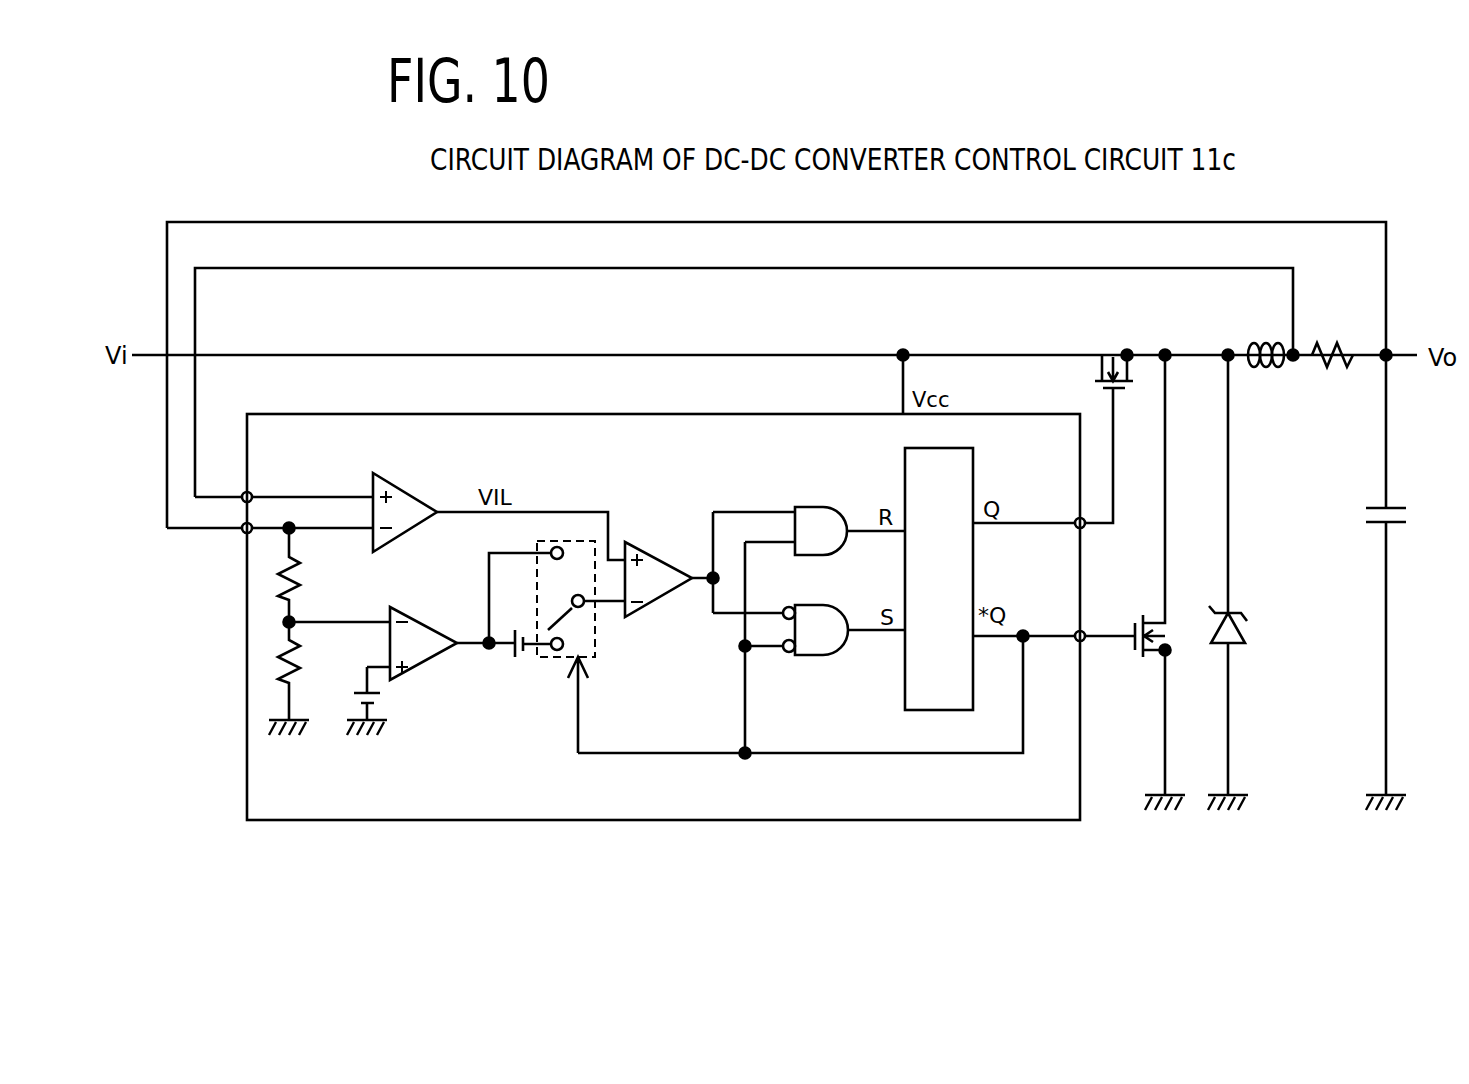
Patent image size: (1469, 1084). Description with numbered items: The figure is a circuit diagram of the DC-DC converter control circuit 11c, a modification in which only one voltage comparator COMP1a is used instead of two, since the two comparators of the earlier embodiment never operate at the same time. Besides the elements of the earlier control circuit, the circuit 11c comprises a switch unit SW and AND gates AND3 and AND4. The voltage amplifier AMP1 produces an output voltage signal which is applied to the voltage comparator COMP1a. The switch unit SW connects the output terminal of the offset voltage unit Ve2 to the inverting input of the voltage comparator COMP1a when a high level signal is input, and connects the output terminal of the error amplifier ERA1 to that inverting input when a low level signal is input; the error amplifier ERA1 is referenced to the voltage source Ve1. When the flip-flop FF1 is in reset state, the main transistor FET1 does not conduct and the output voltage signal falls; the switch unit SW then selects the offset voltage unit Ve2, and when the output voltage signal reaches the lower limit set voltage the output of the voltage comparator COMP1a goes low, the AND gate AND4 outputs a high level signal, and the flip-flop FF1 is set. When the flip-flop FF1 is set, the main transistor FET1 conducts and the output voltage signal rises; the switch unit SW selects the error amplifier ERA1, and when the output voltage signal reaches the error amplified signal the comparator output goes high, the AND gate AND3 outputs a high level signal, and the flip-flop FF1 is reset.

The DC-DC converter control circuit 11c is at (1003, 413).
The voltage amplifier AMP1 is at (406, 505).
The error amplifier ERA1 is at (418, 636).
The reference voltage source Ve1 is at (380, 700).
The offset voltage unit Ve2 is at (517, 657).
The switch unit SW is at (560, 540).
The voltage comparator COMP1a is at (658, 572).
The AND gate AND3 is at (846, 516).
The AND gate AND4 is at (844, 616).
The flip-flop FF1 is at (939, 579).
The main transistor FET1 is at (1116, 421).